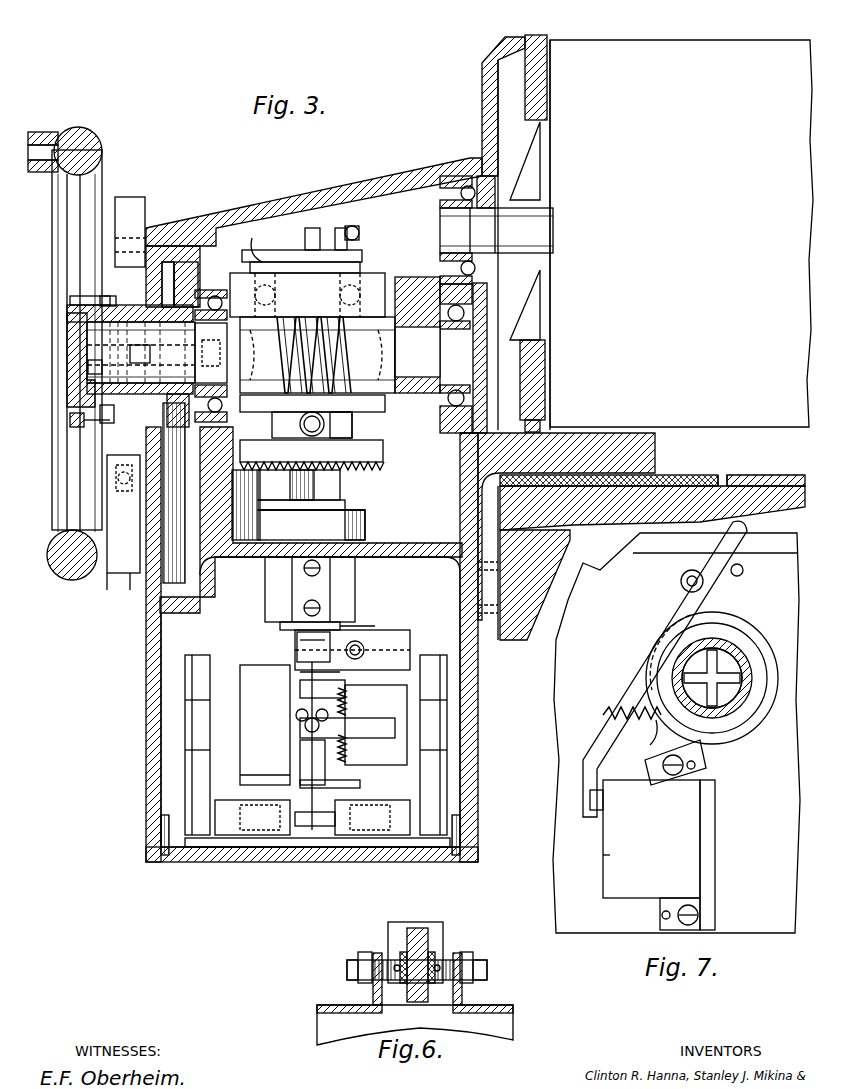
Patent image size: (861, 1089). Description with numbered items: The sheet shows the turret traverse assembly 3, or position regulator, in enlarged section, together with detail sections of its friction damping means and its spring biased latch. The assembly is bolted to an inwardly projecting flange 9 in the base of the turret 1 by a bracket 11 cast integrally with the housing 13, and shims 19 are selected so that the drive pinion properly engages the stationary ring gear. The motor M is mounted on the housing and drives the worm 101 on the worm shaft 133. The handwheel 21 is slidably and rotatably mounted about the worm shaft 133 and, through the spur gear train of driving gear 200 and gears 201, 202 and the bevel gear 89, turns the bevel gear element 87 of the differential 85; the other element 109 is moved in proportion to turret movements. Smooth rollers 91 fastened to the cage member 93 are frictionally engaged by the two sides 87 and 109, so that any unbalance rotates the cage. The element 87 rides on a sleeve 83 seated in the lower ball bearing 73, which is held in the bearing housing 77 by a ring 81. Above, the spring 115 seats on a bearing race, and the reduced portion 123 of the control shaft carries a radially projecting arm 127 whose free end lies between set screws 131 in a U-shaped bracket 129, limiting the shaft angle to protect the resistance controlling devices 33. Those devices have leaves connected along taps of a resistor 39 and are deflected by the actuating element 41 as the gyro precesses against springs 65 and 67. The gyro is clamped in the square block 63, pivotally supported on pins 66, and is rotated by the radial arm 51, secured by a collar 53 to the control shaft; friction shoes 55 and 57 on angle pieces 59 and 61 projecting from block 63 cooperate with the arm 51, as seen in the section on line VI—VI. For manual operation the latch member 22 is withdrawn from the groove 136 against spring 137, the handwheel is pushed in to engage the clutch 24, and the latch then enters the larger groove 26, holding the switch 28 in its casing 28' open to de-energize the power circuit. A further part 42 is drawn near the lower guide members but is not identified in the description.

In FIG. 3, the turret 1 is at (775, 476).
In FIG. 3, the turret traverse assembly 3 is at (452, 100).
In FIG. 3, the inwardly projecting flange 9 is at (742, 477).
In FIG. 3, the bracket 11 is at (655, 450).
In FIG. 3, the housing 13 is at (146, 511).
In FIG. 7, the housing 13 is at (600, 590).
In FIG. 3, the shims 19 is at (700, 478).
In FIG. 3, the handwheel 21 is at (100, 156).
In FIG. 3, the latch member 22 is at (132, 220).
In FIG. 7, the latch member 22 is at (688, 572).
In FIG. 3, the clutch 24 is at (98, 355).
In FIG. 7, the clutch 24 is at (703, 705).
In FIG. 3, the groove 26 is at (100, 305).
In FIG. 7, the groove 26 is at (740, 650).
In FIG. 3, the switch 28 is at (94, 584).
In FIG. 7, the switch 28 is at (639, 855).
In FIG. 3, the casing 28' is at (113, 594).
In FIG. 7, the casing 28' is at (587, 857).
In FIG. 3, the resistance controlling devices 33 is at (280, 848).
In FIG. 3, the resistor 39 is at (205, 720).
In FIG. 3, the actuating element 41 is at (312, 790).
In FIG. 3, the slide blocks 42 is at (312, 818).
In FIG. 3, the arm 51 is at (395, 633).
In FIG. 6, the arm 51 is at (418, 928).
In FIG. 3, the collar 53 is at (300, 650).
In FIG. 6, the friction shoe 55 is at (398, 928).
In FIG. 6, the friction shoe 57 is at (434, 958).
In FIG. 3, the angle piece 59 is at (408, 652).
In FIG. 6, the angle piece 59 is at (334, 1004).
In FIG. 6, the angle piece 61 is at (498, 1005).
In FIG. 3, the gyro clamping block 63 is at (310, 755).
In FIG. 6, the gyro clamping block 63 is at (322, 1031).
In FIG. 3, the spring 65 is at (348, 698).
In FIG. 3, the pins 66 is at (306, 724).
In FIG. 3, the spring 67 is at (348, 752).
In FIG. 3, the lower ball bearing 73 is at (350, 500).
In FIG. 3, the bearing housing 77 is at (365, 520).
In FIG. 3, the ring 81 is at (355, 505).
In FIG. 3, the sleeve 83 is at (336, 487).
In FIG. 3, the differential 85 is at (351, 425).
In FIG. 3, the bevel gear element 87 is at (383, 468).
In FIG. 3, the bevel gear 89 is at (258, 512).
In FIG. 3, the rollers 91 is at (298, 427).
In FIG. 3, the cage member 93 is at (340, 420).
In FIG. 3, the worm 101 is at (338, 350).
In FIG. 3, the upper differential element 109 is at (268, 404).
In FIG. 3, the spring 115 is at (243, 243).
In FIG. 3, the reduced portion of shaft 123 is at (310, 243).
In FIG. 3, the radially projecting arm 127 is at (323, 240).
In FIG. 3, the U-shaped bracket 129 is at (341, 230).
In FIG. 3, the set screws 131 is at (353, 226).
In FIG. 3, the worm shaft 133 is at (95, 365).
In FIG. 7, the worm shaft 133 is at (735, 705).
In FIG. 3, the groove 136 is at (115, 300).
In FIG. 7, the groove 136 is at (742, 628).
In FIG. 3, the spring 137 is at (110, 418).
In FIG. 7, the spring 137 is at (632, 722).
In FIG. 3, the driving gear 200 is at (182, 284).
In FIG. 3, the spur gear 201 is at (196, 330).
In FIG. 3, the spur gear 202 is at (185, 565).
In FIG. 3, the motor M is at (652, 48).
In FIG. 3, the section line VI— VI is at (350, 646).